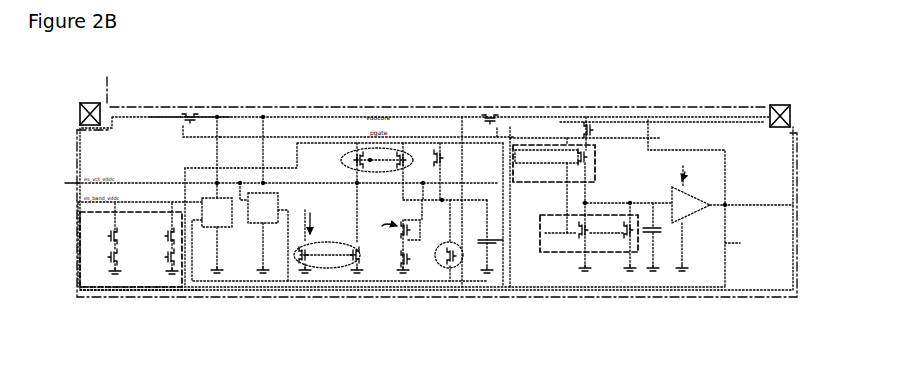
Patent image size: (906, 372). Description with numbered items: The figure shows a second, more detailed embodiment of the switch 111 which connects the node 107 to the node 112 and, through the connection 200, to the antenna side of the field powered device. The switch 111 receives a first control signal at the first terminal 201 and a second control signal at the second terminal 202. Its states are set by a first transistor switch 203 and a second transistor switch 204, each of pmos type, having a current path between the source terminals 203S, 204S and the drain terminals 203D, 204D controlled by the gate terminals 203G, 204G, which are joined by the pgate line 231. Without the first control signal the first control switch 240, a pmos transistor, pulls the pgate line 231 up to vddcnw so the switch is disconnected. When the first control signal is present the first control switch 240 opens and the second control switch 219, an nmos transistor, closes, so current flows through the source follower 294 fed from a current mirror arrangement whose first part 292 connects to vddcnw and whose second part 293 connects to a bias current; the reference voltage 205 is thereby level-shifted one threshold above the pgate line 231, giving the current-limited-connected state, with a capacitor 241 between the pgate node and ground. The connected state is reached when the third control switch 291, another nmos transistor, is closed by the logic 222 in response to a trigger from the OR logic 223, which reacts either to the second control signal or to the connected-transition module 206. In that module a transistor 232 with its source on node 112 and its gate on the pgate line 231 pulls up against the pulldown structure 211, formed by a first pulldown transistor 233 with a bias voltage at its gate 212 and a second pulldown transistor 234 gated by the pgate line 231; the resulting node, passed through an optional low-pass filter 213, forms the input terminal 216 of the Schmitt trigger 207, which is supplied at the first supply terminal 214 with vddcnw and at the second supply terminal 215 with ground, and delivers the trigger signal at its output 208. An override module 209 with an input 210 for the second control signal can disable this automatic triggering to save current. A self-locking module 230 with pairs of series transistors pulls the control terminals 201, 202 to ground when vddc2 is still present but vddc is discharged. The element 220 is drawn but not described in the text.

The connection 200 is at (107, 98).
The first terminal 201 is at (72, 182).
The node 107 is at (110, 126).
The node 112 is at (770, 100).
The switch 111 is at (143, 298).
The second terminal 202 is at (77, 203).
The self-locking module 230 is at (117, 288).
The first transistor switch 203 is at (186, 108).
The source terminal 203S is at (157, 117).
The drain terminal 203D is at (195, 117).
The gate terminal 203G is at (182, 127).
The second transistor switch 204 is at (489, 106).
The source terminal 204S is at (510, 122).
The drain terminal 204D is at (460, 117).
The gate terminal 204G is at (493, 127).
The OR logic 223 is at (220, 222).
The logic 222 is at (258, 218).
The pgate line 231 is at (304, 137).
The current mirror transistor 220 is at (334, 138).
The first part of current mirror arrangement 292 is at (363, 142).
The first control switch 240 is at (431, 149).
The second part of current mirror arrangement 293 is at (335, 267).
The source follower 294 is at (402, 236).
The reference voltage 205 is at (387, 246).
The second control switch 219 is at (413, 260).
The third control switch 291 is at (450, 265).
The capacitor 241 is at (501, 242).
The input 210 is at (522, 152).
The override module 209 is at (545, 182).
The transistor 232 is at (582, 133).
The Schmitt trigger 207 is at (670, 193).
The first supply terminal 214 is at (681, 181).
The input terminal 216 is at (668, 205).
The output 208 is at (758, 205).
The connected-transition module 206 is at (728, 243).
The second supply terminal 215 is at (682, 262).
The low-pass filter 213 is at (654, 233).
The pulldown structure 211 is at (562, 250).
The second pulldown transistor 234 is at (580, 236).
The gate 212 is at (615, 233).
The first pulldown transistor 233 is at (620, 236).